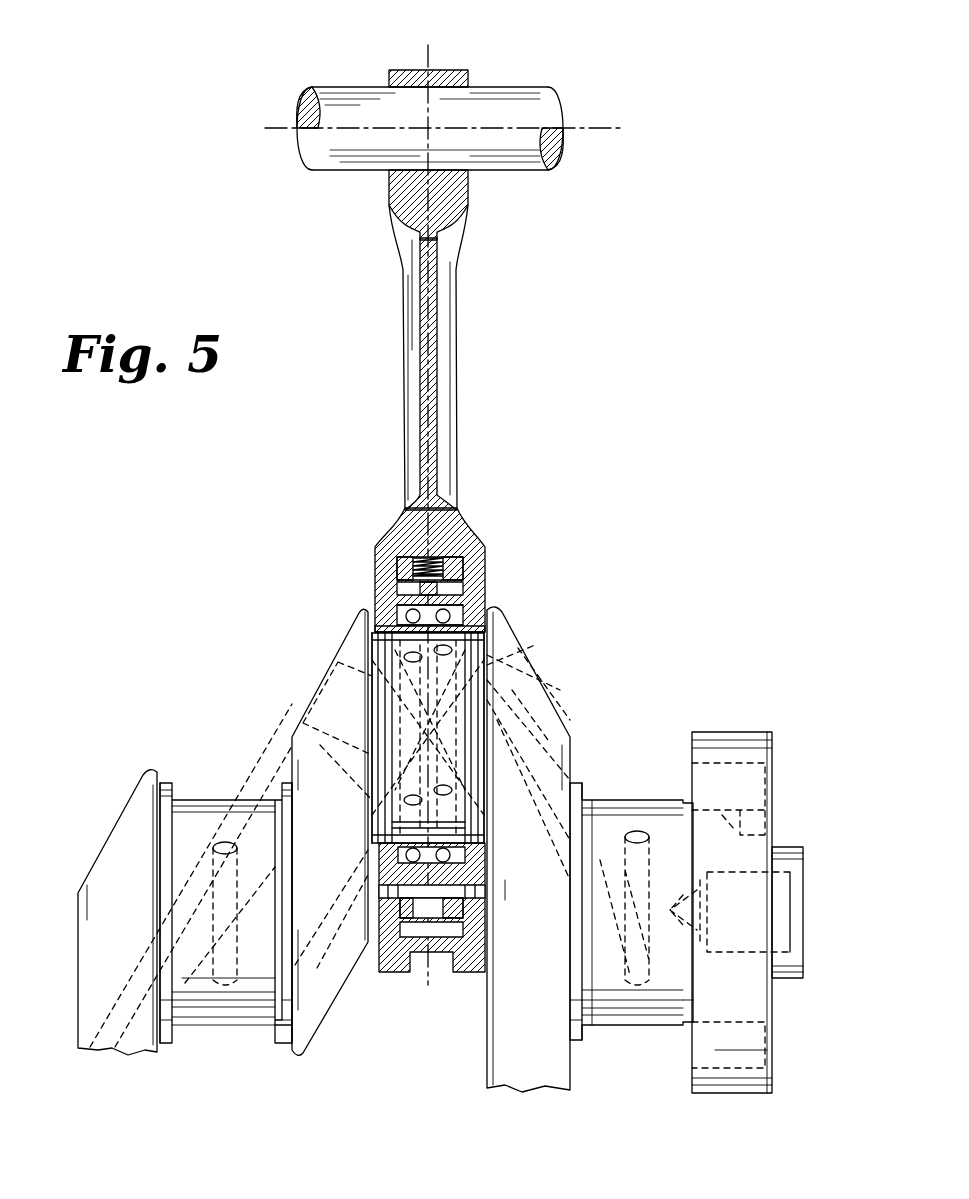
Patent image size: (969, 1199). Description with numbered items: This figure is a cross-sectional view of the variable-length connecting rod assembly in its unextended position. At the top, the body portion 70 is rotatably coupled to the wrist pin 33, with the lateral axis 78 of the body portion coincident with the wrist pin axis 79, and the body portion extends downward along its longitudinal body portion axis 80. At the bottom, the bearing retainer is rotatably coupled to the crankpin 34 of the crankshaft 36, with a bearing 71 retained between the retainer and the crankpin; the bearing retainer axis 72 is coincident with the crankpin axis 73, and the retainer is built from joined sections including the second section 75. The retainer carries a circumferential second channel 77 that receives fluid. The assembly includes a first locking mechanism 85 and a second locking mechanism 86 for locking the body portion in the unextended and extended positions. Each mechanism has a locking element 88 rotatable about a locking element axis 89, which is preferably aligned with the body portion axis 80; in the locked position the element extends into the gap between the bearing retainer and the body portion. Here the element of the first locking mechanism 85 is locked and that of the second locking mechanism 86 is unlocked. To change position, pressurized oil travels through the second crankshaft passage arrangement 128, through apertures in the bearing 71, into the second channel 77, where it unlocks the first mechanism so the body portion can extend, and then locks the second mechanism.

The wrist pin 33 is at (497, 87).
The lateral axis 78 is at (283, 128).
The wrist pin axis 79 is at (320, 515).
The body portion axis 80 is at (468, 210).
The body portion 70 is at (458, 360).
The locking element 88 is at (455, 555).
The second channel 77 is at (485, 585).
The bearing 71 is at (482, 602).
The locking element axis 89 is at (375, 565).
The second locking mechanism 86 is at (372, 598).
The crankpin 34 is at (372, 652).
The first locking mechanism 85 is at (468, 972).
The bearing retainer axis 72 is at (268, 737).
The crankpin axis 73 is at (226, 859).
The second section 75 is at (520, 662).
The crankshaft 36 is at (768, 732).
The second crankshaft passage arrangement 128 is at (575, 770).